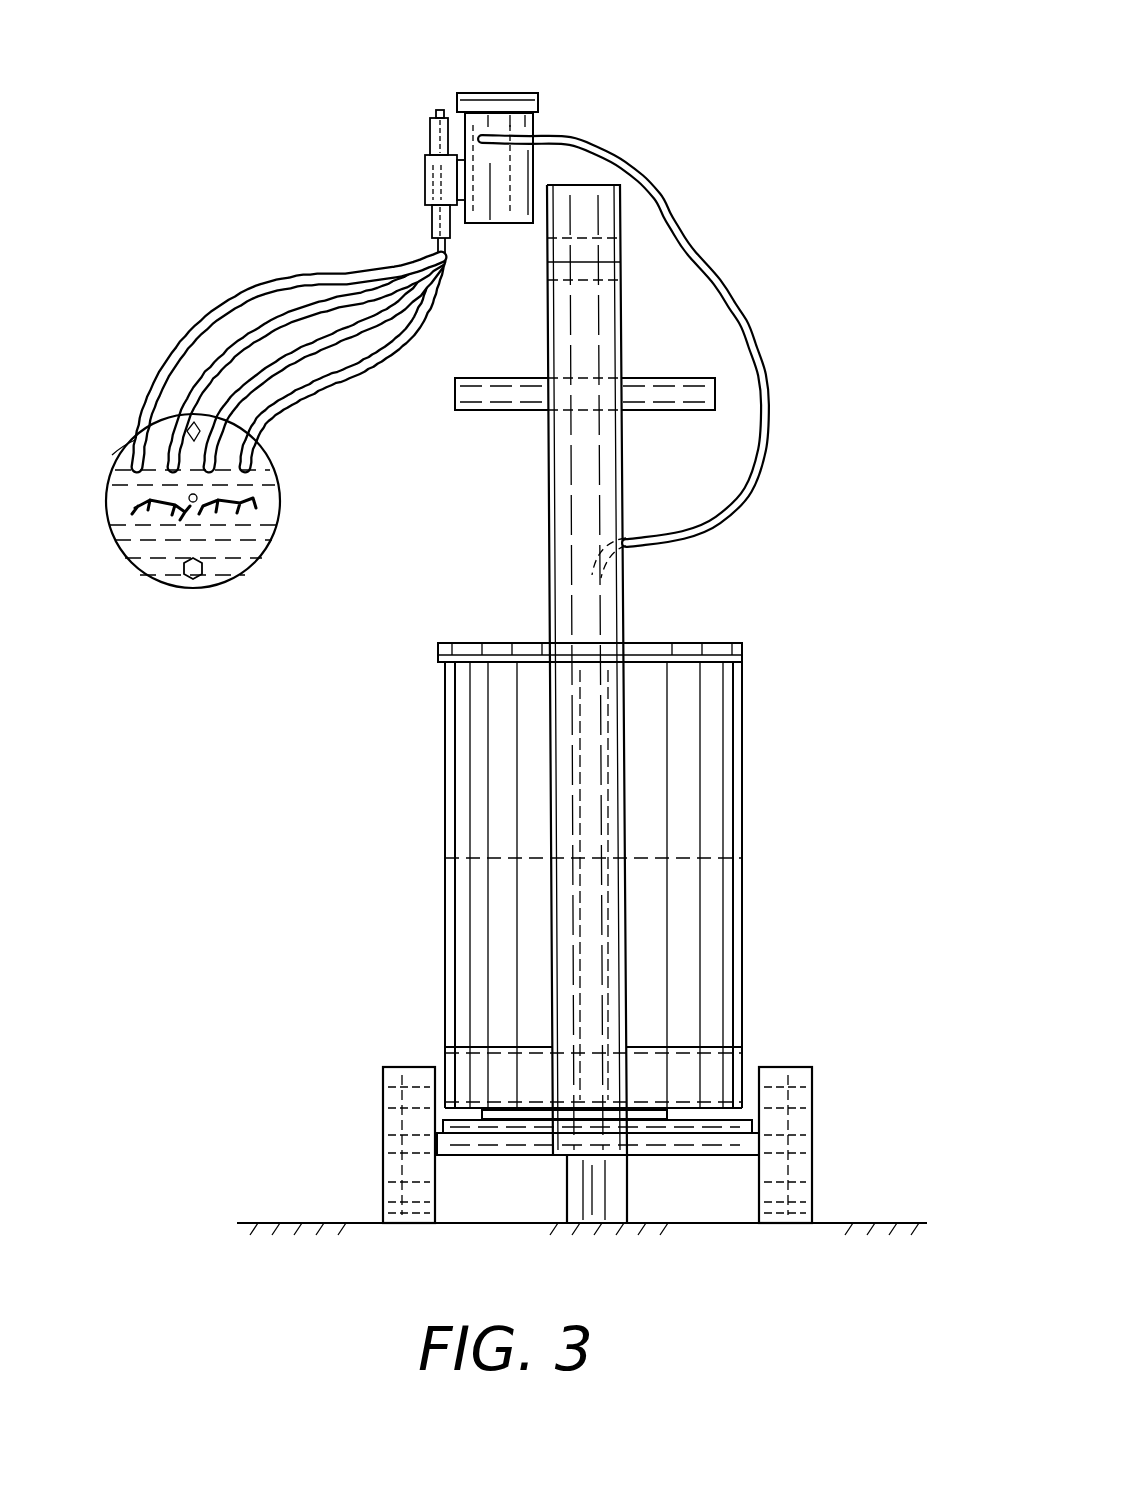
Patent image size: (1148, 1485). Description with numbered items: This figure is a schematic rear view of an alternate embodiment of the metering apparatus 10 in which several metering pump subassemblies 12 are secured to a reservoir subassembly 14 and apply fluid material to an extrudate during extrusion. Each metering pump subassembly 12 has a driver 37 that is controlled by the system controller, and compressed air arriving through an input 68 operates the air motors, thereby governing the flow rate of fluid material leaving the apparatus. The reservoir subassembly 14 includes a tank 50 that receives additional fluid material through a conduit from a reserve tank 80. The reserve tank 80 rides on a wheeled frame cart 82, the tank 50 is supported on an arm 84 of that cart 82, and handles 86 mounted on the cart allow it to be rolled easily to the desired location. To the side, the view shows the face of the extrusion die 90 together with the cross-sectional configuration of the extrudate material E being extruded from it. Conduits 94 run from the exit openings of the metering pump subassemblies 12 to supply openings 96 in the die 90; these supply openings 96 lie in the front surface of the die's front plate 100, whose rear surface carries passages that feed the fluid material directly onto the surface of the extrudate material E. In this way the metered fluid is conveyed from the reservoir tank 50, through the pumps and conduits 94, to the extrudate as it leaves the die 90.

The metering apparatus 10 is at (637, 127).
The metering pump subassembly 12 is at (414, 122).
The reservoir subassembly 14 is at (497, 92).
The driver 37 is at (422, 139).
The tank 50 is at (542, 124).
The input 68 is at (440, 110).
The reserve tank 80 is at (680, 772).
The wheeled frame cart 82 is at (592, 820).
The arm 84 is at (541, 217).
The handles 86 is at (513, 393).
The extrusion die 90 is at (250, 580).
The conduit 94 is at (180, 372).
The supply openings 96 is at (133, 443).
The front plate 100 is at (173, 566).
The extrudate material E is at (139, 509).